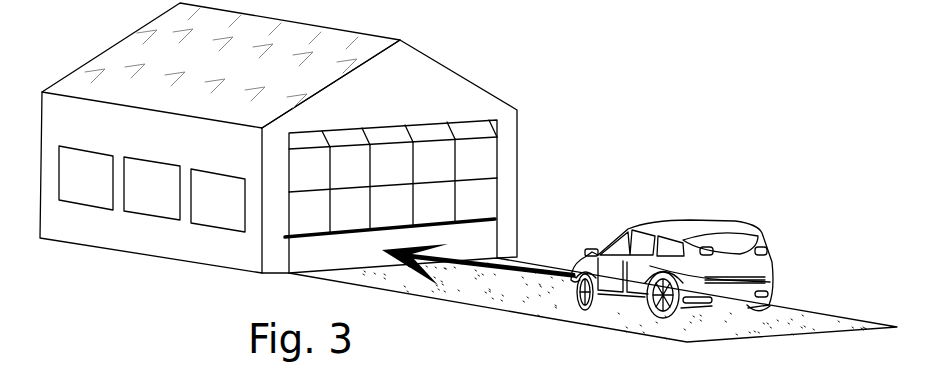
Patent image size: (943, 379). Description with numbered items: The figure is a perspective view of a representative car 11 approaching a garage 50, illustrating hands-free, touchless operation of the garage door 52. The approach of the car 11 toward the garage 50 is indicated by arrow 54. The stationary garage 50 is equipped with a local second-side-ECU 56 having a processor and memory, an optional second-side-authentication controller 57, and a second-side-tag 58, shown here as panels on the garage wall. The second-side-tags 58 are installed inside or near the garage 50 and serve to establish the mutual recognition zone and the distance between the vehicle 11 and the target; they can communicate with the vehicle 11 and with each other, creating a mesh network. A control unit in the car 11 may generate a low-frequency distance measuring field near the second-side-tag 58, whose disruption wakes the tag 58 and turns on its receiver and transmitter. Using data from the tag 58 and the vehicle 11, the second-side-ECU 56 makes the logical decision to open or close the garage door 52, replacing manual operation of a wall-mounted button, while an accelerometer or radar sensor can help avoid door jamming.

The garage 50 is at (130, 52).
The garage door 52 is at (472, 163).
The arrow 54 is at (520, 270).
The second-side-ECU 56 is at (98, 191).
The second-side-authentication controller 57 is at (165, 204).
The second-side-tag 58 is at (200, 211).
The car 11 is at (742, 240).